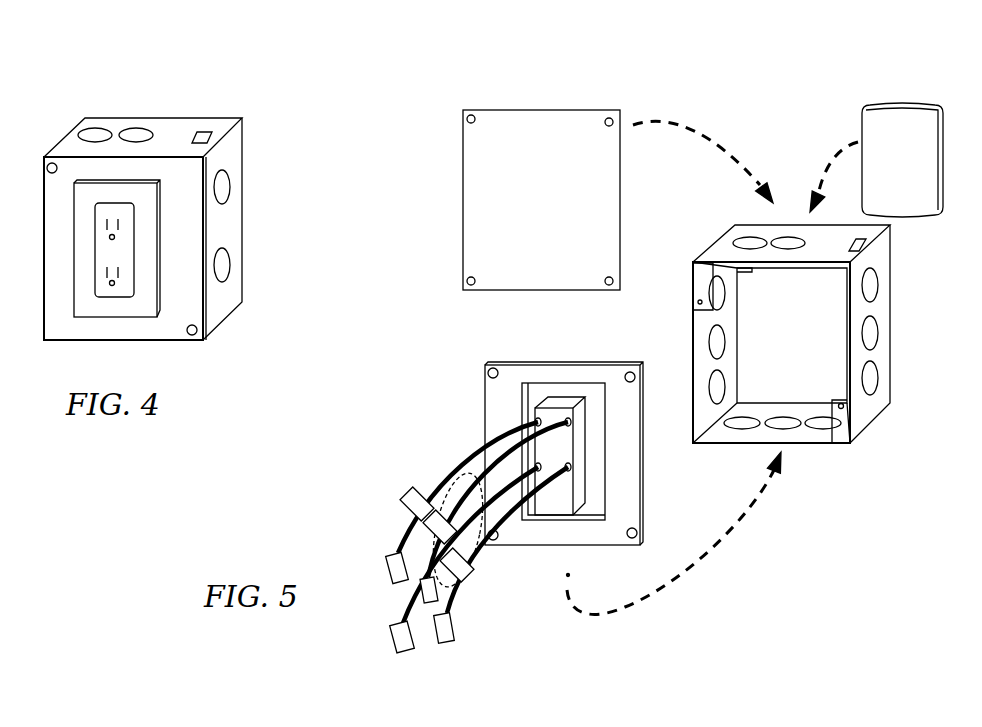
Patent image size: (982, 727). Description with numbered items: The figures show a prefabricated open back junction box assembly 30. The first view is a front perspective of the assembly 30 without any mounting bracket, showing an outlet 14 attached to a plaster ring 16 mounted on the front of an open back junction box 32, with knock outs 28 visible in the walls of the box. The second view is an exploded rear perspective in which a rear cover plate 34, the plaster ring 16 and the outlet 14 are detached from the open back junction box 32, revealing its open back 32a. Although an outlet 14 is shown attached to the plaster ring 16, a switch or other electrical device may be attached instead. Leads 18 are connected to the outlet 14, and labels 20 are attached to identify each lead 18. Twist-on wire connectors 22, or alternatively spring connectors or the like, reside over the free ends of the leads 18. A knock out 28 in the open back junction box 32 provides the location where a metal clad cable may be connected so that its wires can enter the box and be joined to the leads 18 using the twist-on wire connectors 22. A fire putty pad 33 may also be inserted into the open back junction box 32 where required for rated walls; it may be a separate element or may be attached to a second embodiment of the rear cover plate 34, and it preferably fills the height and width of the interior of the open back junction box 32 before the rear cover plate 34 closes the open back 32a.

In FIG. 4, the outlet 14 is at (115, 262).
In FIG. 5, the outlet 14 is at (565, 438).
In FIG. 4, the plaster ring 16 is at (107, 328).
In FIG. 5, the plaster ring 16 is at (627, 490).
In FIG. 5, the leads 18 is at (475, 563).
In FIG. 5, the labels 20 is at (412, 500).
In FIG. 5, the twist-on wire connectors 22 is at (396, 551).
In FIG. 5, the knock out 28 is at (788, 240).
In FIG. 4, the open back junction box assembly 30 is at (143, 201).
In FIG. 5, the open back junction box assembly 30 is at (425, 70).
In FIG. 4, the open back junction box 32 is at (113, 124).
In FIG. 5, the open back junction box 32 is at (737, 228).
In FIG. 5, the open back 32a is at (794, 298).
In FIG. 5, the fire putty pad 33 is at (902, 160).
In FIG. 5, the rear cover plate 34 is at (541, 200).